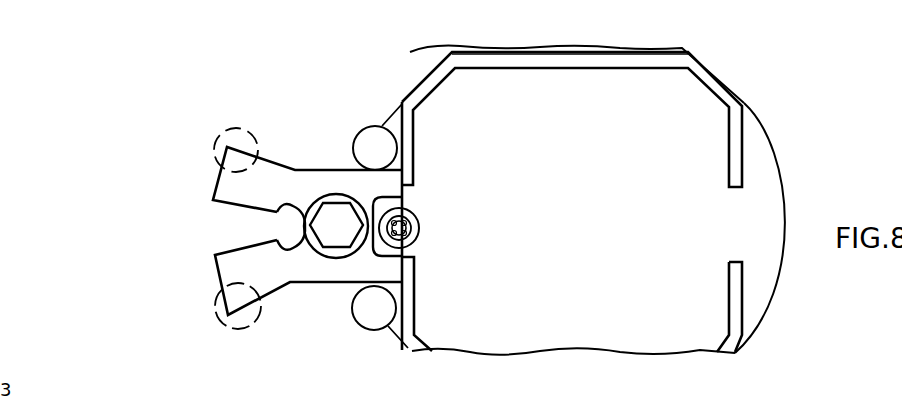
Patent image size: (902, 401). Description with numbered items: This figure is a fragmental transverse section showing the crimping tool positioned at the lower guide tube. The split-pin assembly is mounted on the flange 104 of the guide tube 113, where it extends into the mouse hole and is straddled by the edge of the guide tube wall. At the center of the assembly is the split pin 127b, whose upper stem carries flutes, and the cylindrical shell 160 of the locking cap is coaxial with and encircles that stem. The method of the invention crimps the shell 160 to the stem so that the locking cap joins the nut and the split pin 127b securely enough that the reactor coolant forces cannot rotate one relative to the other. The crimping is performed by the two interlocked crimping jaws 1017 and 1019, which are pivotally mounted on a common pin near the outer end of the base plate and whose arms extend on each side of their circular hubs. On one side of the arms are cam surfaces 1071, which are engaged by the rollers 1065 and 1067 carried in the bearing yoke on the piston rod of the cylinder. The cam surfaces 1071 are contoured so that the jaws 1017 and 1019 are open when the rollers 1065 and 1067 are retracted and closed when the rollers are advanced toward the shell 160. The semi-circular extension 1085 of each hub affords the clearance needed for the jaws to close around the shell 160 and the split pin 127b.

The flange 104 is at (720, 76).
The guide tube 113 is at (486, 49).
The crimping jaw 1019 is at (337, 160).
The crimping jaw 1017 is at (335, 292).
The semi-circular extension 1085 is at (277, 220).
The roller 1065 is at (374, 142).
The roller 1067 is at (374, 312).
The cam surface 1071 is at (272, 312).
The cylindrical shell 160 is at (412, 236).
The split pin 127b is at (410, 220).